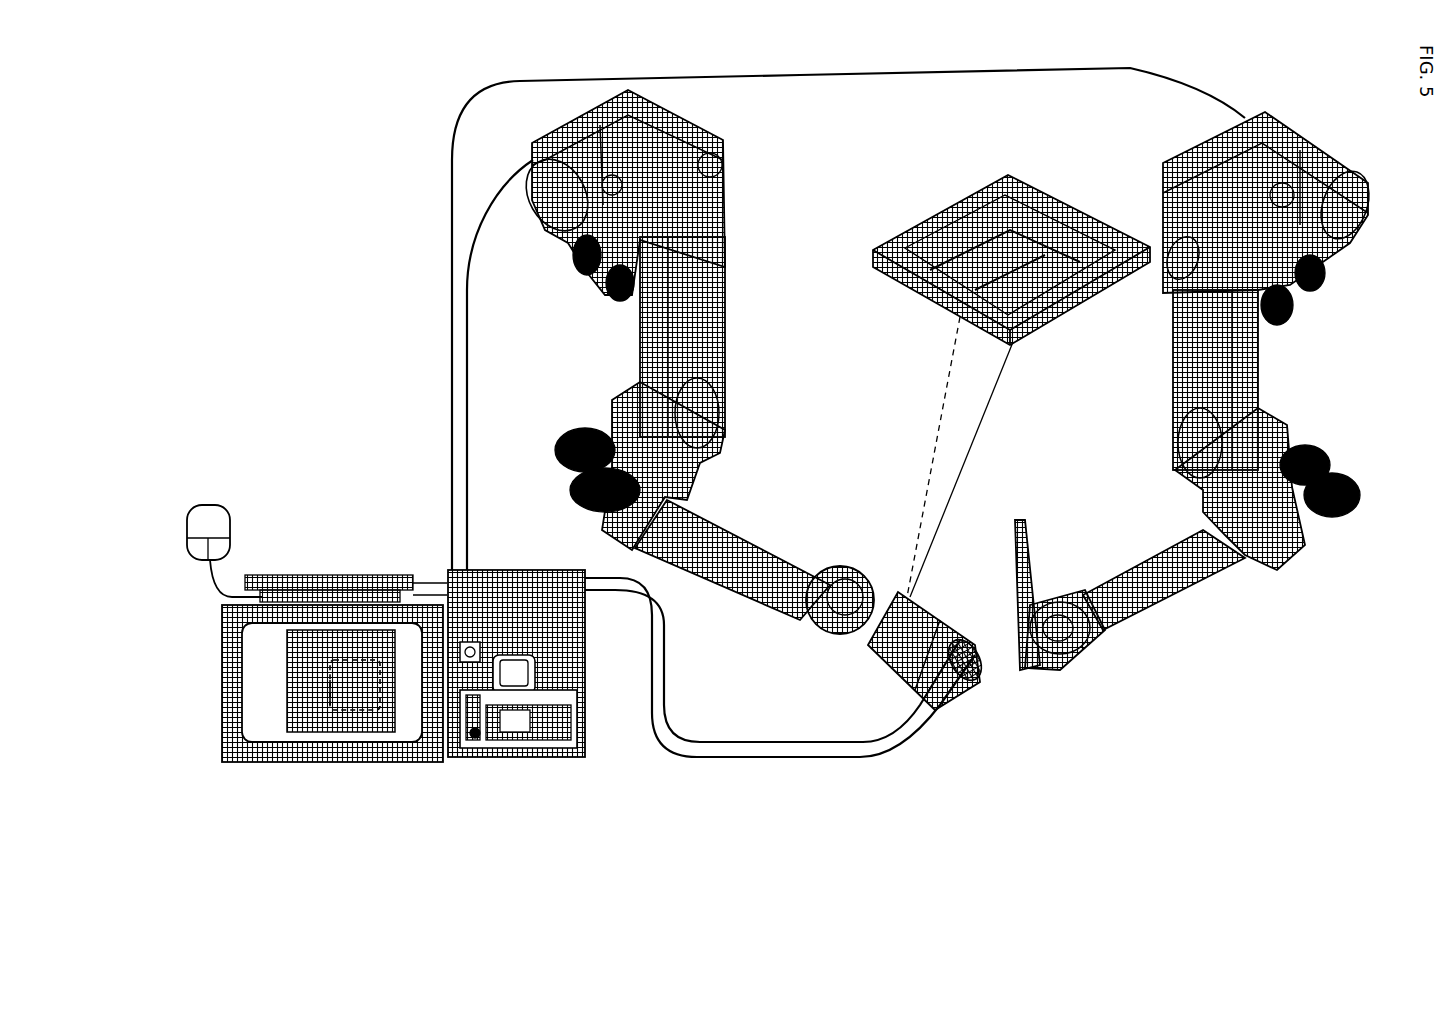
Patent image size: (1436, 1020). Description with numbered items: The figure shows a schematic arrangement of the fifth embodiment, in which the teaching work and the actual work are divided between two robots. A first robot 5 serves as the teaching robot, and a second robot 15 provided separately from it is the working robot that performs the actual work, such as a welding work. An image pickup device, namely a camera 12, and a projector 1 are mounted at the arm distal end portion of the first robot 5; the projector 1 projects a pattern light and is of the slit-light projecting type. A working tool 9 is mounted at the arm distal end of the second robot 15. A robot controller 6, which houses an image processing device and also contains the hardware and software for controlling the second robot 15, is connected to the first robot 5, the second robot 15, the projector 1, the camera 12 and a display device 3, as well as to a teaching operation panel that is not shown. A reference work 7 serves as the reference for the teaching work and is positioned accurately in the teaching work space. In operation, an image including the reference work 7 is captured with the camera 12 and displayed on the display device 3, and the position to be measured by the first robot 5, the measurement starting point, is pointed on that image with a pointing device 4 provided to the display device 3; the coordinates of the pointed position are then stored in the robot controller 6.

The projector 1 is at (887, 670).
The display device 3 is at (222, 762).
The pointing device 4 is at (200, 548).
The first robot 5 is at (565, 230).
The robot controller 6 is at (1000, 637).
The reference work 7 is at (912, 293).
The working tool 9 is at (456, 757).
The image pickup device (camera) 12 is at (953, 703).
The second robot 15 is at (1318, 290).